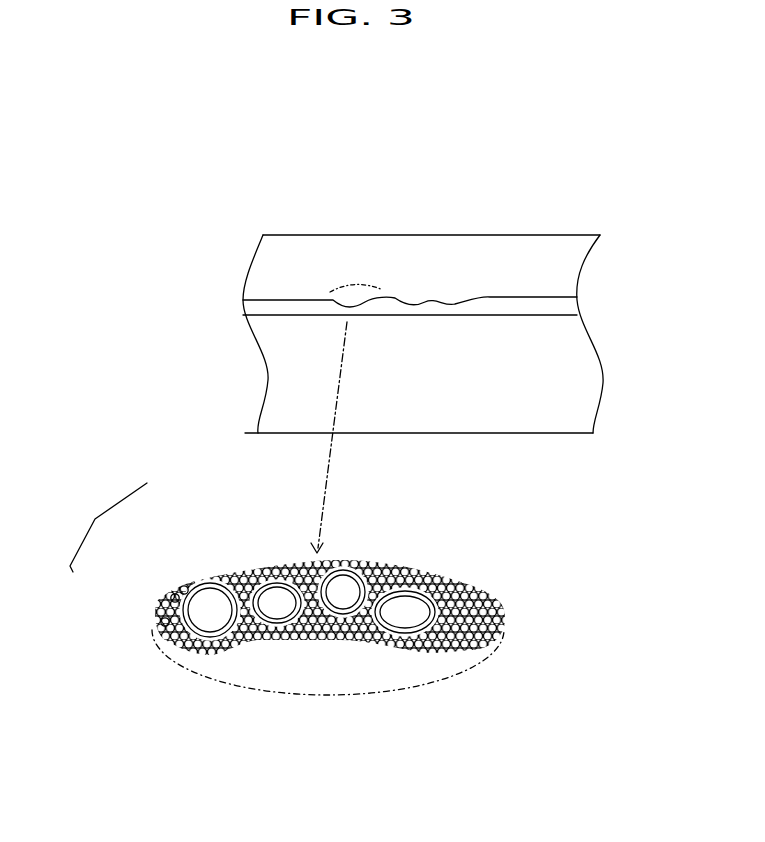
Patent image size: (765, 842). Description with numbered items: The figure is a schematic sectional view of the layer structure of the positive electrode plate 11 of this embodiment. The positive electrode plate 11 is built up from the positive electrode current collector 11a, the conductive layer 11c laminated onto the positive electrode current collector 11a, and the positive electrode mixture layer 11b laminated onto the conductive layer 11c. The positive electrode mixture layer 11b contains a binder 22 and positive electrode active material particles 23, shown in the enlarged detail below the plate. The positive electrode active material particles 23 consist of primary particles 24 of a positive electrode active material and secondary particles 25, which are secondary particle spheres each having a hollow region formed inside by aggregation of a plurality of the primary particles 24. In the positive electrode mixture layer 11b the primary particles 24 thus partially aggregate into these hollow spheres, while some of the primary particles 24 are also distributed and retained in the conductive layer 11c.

The positive electrode plate 11 is at (408, 190).
The positive electrode current collector 11a is at (512, 418).
The positive electrode mixture layer 11b is at (305, 243).
The conductive layer 11c is at (577, 300).
The binder 22 is at (476, 596).
The positive electrode active material particles 23 is at (98, 527).
The primary particles 24 is at (188, 600).
The secondary particles 25 is at (212, 616).